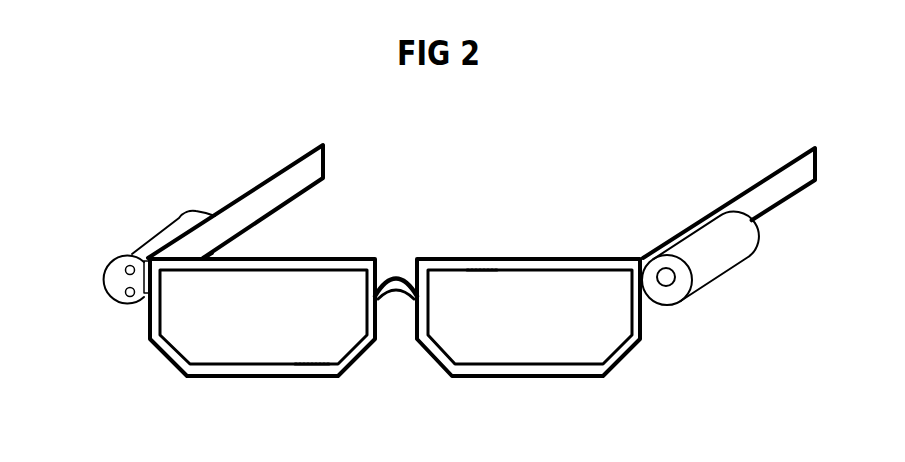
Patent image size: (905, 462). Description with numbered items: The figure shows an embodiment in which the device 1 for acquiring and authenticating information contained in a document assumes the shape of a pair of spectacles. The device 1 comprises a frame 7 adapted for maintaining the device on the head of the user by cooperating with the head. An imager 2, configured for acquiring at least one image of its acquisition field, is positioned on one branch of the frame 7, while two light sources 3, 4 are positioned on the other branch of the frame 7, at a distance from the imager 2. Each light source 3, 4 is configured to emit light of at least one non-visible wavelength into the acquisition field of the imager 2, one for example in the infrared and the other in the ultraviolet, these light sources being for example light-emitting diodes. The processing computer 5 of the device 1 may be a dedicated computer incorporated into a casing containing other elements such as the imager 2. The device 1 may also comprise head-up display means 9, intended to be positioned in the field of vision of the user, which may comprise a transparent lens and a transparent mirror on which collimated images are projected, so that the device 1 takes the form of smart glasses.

The device 1 is at (423, 183).
The imager 2 is at (666, 268).
The light source 3 is at (131, 265).
The light source 4 is at (130, 297).
The processing computer 5 is at (722, 222).
The frame 7 is at (466, 266).
The head-up display means 9 is at (325, 340).